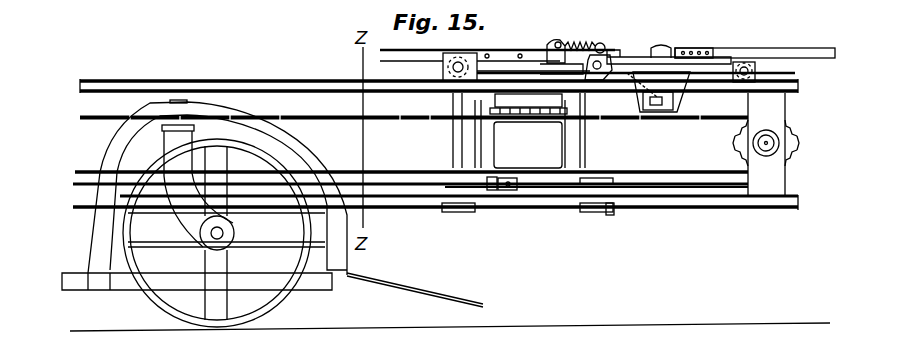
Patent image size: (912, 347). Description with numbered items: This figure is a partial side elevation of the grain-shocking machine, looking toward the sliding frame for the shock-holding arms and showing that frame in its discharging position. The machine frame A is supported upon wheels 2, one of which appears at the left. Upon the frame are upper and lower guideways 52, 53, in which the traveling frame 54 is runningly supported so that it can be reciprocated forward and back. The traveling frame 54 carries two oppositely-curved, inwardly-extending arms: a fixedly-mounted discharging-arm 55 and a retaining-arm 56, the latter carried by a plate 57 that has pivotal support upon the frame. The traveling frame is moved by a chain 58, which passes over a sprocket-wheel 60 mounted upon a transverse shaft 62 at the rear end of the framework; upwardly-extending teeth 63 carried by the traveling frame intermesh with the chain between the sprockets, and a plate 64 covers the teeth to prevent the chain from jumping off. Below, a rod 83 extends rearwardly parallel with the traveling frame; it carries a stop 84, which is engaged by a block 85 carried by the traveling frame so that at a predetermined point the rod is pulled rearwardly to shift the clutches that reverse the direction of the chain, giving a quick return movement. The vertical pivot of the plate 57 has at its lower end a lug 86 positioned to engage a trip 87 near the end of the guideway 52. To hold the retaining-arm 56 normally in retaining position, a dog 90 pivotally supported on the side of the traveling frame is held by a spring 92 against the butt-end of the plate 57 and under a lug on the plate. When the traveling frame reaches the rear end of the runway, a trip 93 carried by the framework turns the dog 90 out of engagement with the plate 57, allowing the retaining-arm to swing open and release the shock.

The wheels 2 is at (280, 307).
The frame A is at (113, 284).
The guideway 52 is at (247, 77).
The guideway 53 is at (410, 212).
The traveling frame 54 is at (528, 145).
The discharging-arm 55 is at (505, 55).
The retaining-arm 56 is at (765, 53).
The plate 57 is at (635, 57).
The chain 58 is at (415, 120).
The sprocket-wheel 60 is at (793, 148).
The transverse shaft 62 is at (776, 140).
The teeth 63 is at (490, 115).
The plate 64 is at (567, 110).
The rod 83 is at (673, 190).
The stop 84 is at (517, 192).
The block 85 is at (492, 193).
The lug 86 is at (627, 112).
The trip 87 is at (663, 113).
The dog 90 is at (602, 50).
The spring 92 is at (570, 49).
The trip 93 is at (552, 87).